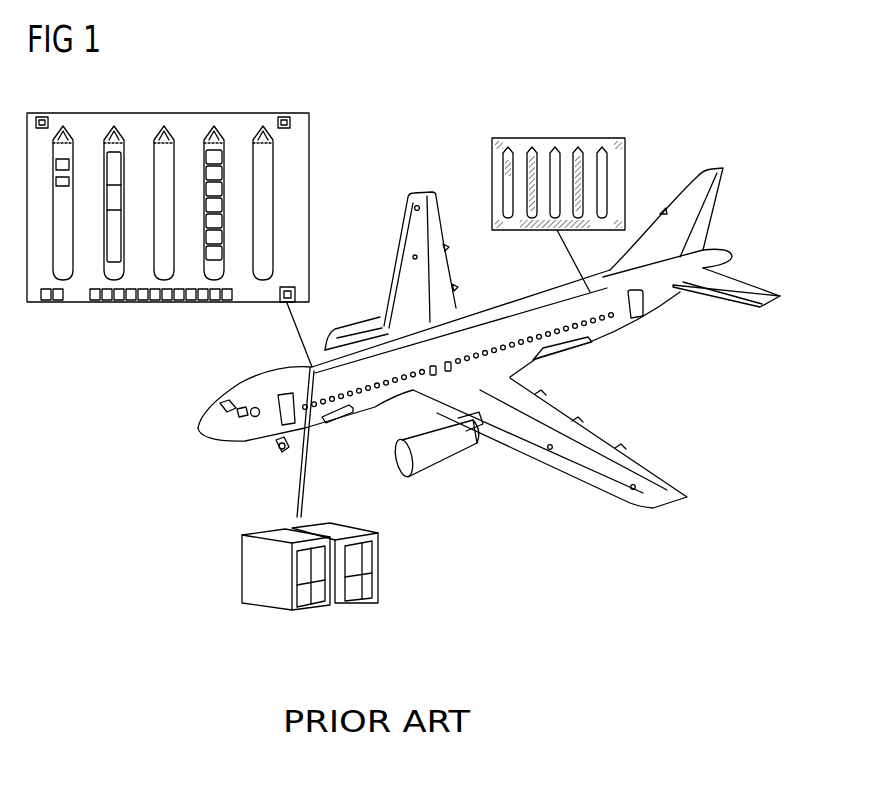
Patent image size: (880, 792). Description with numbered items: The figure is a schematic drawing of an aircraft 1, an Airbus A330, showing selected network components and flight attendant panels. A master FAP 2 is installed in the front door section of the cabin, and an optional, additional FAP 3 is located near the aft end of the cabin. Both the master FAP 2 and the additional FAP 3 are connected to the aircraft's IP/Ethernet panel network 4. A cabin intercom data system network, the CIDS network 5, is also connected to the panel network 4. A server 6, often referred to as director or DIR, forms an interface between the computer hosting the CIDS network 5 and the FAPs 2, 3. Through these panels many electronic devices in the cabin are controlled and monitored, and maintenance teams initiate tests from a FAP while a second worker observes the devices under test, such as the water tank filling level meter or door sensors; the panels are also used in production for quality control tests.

The aircraft 1 is at (557, 410).
The master FAP 2 is at (184, 112).
The additional FAP 3 is at (557, 138).
The panel network 4 is at (298, 481).
The cabin intercom data system (CIDS) network 5 is at (305, 490).
The server 6 is at (310, 610).